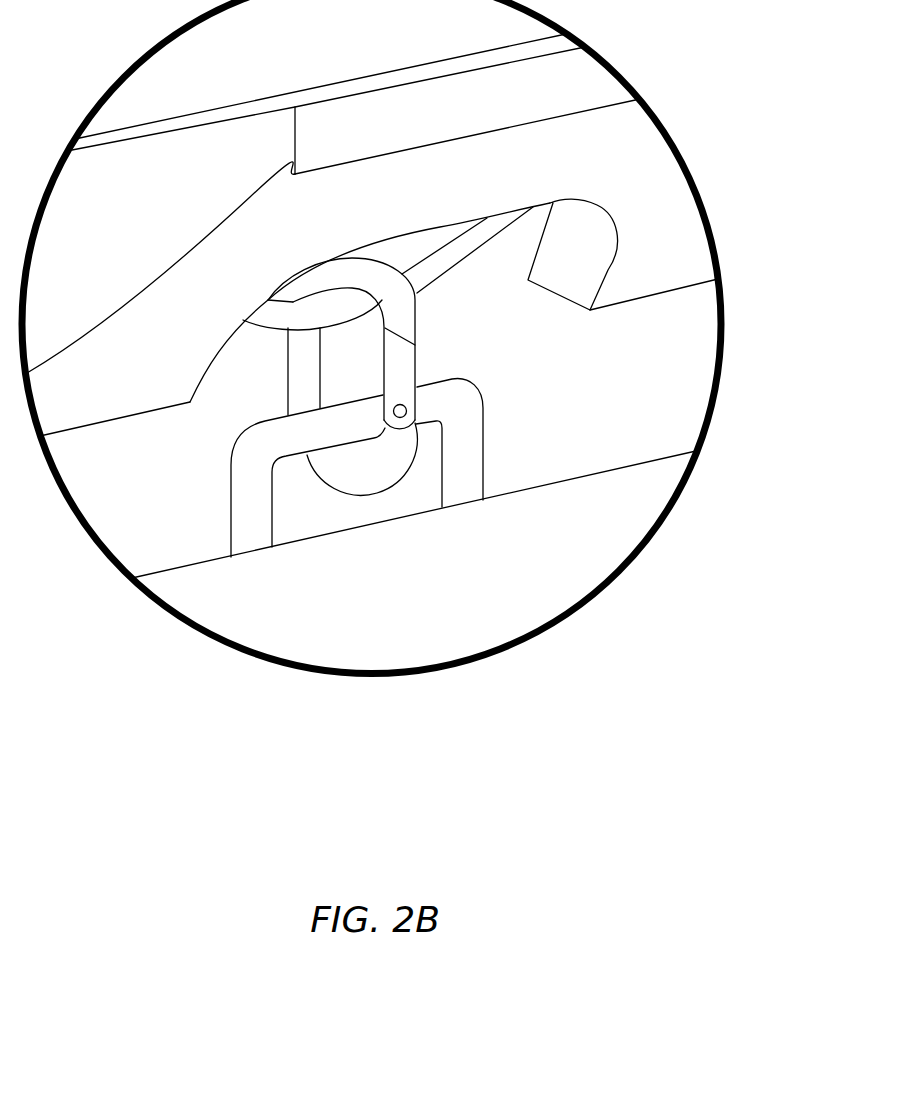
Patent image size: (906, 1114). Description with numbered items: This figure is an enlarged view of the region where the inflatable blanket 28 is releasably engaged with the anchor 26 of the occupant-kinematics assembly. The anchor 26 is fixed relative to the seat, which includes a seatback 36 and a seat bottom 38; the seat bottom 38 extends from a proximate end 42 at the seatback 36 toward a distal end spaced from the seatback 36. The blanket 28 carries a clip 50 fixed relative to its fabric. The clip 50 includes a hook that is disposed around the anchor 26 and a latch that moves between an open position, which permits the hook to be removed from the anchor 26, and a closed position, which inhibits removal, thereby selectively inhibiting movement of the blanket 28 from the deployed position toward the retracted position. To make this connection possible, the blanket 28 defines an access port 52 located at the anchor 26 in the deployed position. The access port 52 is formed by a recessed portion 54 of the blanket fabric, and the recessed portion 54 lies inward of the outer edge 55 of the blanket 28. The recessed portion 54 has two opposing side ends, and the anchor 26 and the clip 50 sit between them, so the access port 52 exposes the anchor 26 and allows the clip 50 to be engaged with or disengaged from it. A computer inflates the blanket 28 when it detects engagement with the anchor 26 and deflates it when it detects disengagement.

The anchor 26 is at (485, 447).
The blanket 28 is at (630, 143).
The seatback 36 is at (680, 318).
The seat bottom 38 is at (652, 490).
The proximate end 42 is at (197, 583).
The clip 50 is at (386, 333).
The access port 52 is at (517, 260).
The recessed portion 54 is at (432, 226).
The outer edge 55 is at (132, 418).